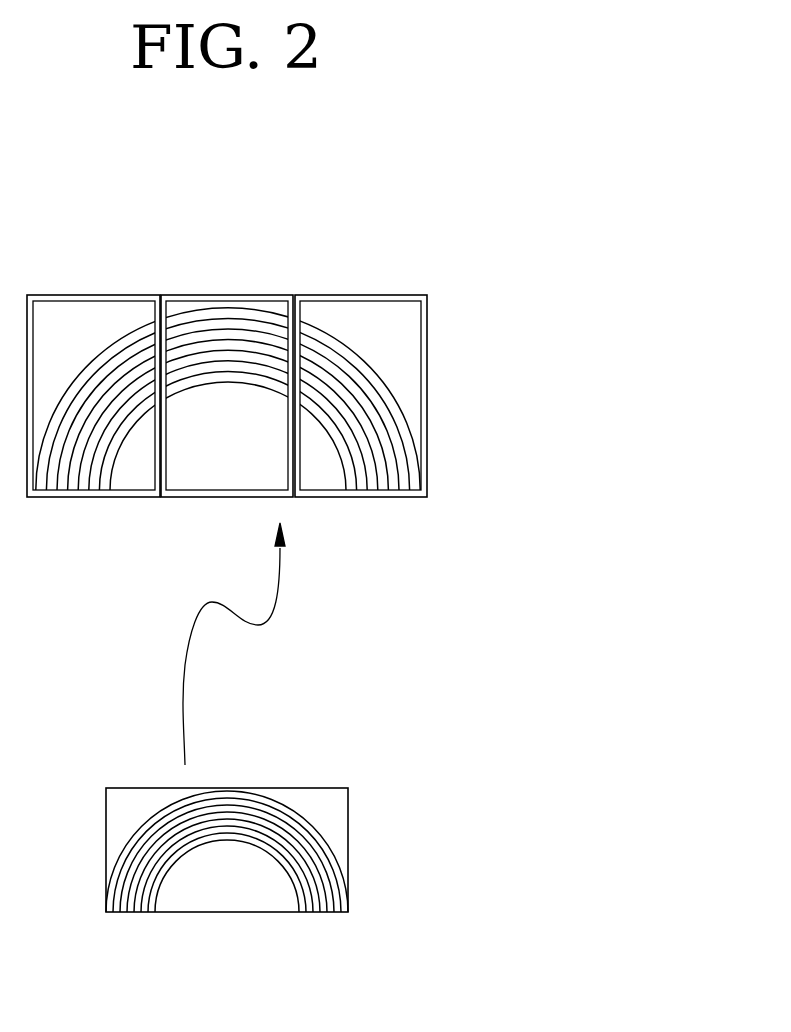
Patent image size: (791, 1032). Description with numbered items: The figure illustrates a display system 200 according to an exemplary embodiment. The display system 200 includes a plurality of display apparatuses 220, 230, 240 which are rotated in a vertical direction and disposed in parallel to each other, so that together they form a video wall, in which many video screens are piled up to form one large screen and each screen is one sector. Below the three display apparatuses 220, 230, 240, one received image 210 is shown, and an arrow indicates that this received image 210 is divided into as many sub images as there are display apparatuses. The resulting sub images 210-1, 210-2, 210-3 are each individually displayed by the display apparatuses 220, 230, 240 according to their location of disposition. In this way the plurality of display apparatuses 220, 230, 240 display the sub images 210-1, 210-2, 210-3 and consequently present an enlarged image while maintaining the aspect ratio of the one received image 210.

The display system 200 is at (256, 155).
The received image 210 is at (348, 850).
The sub image 210-1 is at (121, 468).
The sub image 210-2 is at (220, 468).
The sub image 210-3 is at (330, 468).
The display apparatus 220 is at (57, 294).
The display apparatus 230 is at (191, 294).
The display apparatus 240 is at (324, 294).